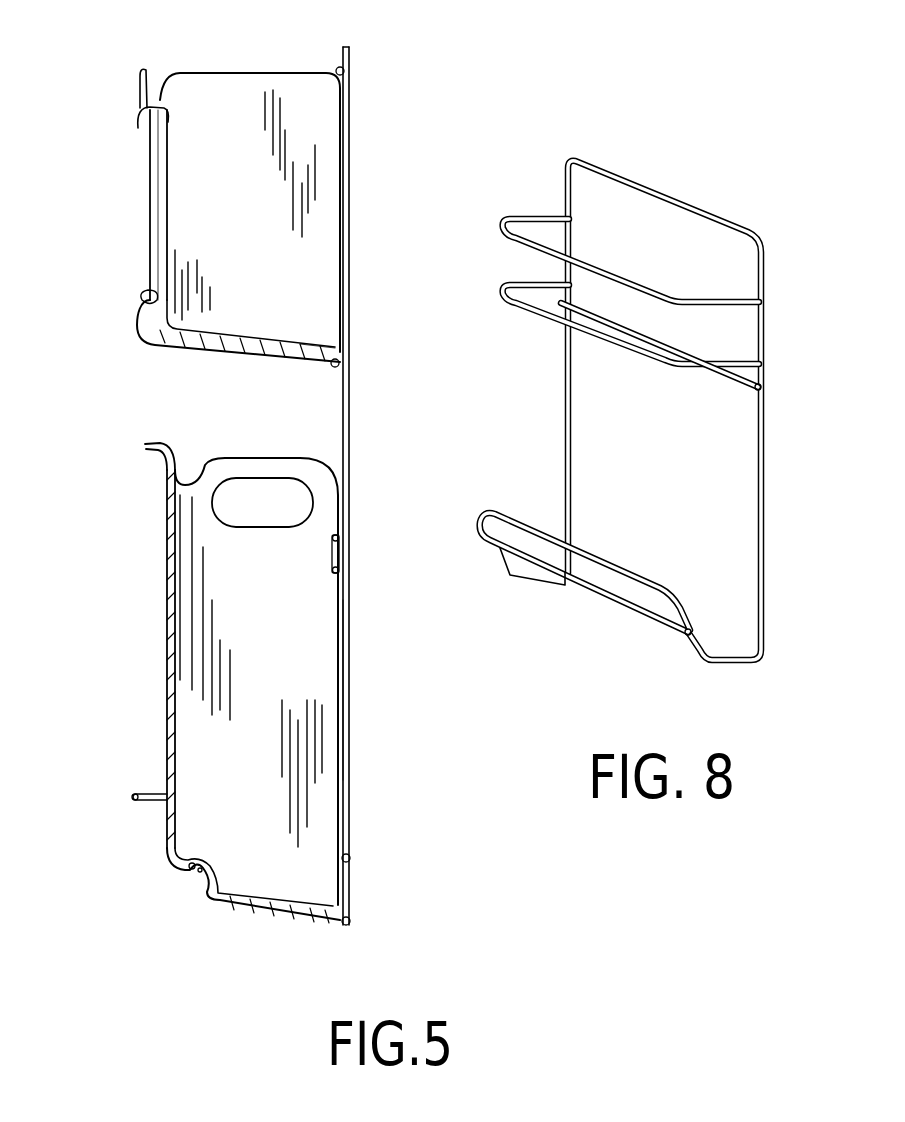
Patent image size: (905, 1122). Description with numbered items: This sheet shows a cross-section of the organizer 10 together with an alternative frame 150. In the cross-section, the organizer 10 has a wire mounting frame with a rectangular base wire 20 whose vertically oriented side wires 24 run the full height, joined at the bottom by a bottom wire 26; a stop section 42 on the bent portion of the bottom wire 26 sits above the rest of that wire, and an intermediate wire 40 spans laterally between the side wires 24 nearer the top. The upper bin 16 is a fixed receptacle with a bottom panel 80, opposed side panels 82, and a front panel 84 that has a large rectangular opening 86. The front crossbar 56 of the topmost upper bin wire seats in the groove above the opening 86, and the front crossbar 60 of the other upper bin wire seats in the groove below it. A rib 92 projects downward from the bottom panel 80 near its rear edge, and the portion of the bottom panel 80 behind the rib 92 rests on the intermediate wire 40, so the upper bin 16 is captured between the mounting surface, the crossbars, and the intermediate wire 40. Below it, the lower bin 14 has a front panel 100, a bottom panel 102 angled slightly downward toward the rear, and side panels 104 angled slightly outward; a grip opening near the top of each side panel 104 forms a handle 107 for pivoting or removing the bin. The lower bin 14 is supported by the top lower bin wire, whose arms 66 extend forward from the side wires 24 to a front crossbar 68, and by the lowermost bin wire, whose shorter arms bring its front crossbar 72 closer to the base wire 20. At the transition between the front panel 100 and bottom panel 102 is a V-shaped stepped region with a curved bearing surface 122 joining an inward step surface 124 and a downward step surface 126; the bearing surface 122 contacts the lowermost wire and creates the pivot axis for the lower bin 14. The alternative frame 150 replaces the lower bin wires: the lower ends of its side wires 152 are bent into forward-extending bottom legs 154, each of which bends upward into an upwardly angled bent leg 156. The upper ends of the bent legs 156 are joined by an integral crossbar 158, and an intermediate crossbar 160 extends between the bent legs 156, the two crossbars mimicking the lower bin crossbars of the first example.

In FIG. 5, the organizer 10 is at (82, 262).
In FIG. 5, the lower bin 14 is at (195, 719).
In FIG. 5, the upper bin 16 is at (130, 337).
In FIG. 5, the base wire 20 is at (352, 690).
In FIG. 5, the side wires 24 is at (350, 404).
In FIG. 5, the bottom wire 26 is at (352, 924).
In FIG. 5, the intermediate wire 40 is at (335, 368).
In FIG. 5, the stop section 42 is at (350, 856).
In FIG. 5, the front crossbar 56 is at (137, 117).
In FIG. 5, the front crossbar 60 is at (145, 298).
In FIG. 5, the arms 66 is at (155, 795).
In FIG. 5, the front crossbar 68 is at (133, 799).
In FIG. 5, the front crossbar 72 is at (195, 882).
In FIG. 5, the bottom panel 80 is at (193, 338).
In FIG. 5, the side panels 82 is at (233, 108).
In FIG. 5, the front panel 84 is at (135, 85).
In FIG. 5, the opening 86 is at (147, 137).
In FIG. 5, the rib 92 is at (325, 357).
In FIG. 5, the front panel 100 is at (168, 625).
In FIG. 5, the bottom panel 102 is at (252, 912).
In FIG. 5, the side panels 104 is at (238, 607).
In FIG. 5, the handle 107 is at (230, 470).
In FIG. 5, the bearing surface 122 is at (190, 878).
In FIG. 5, the inward step surface 124 is at (185, 874).
In FIG. 5, the downward step surface 126 is at (205, 895).
In FIG. 8, the alternative frame 150 is at (606, 404).
In FIG. 8, the side wires 152 is at (570, 400).
In FIG. 8, the bottom legs 154 is at (530, 580).
In FIG. 8, the bent legs 156 is at (482, 520).
In FIG. 8, the crossbar 158 is at (585, 588).
In FIG. 8, the intermediate crossbar 160 is at (620, 600).